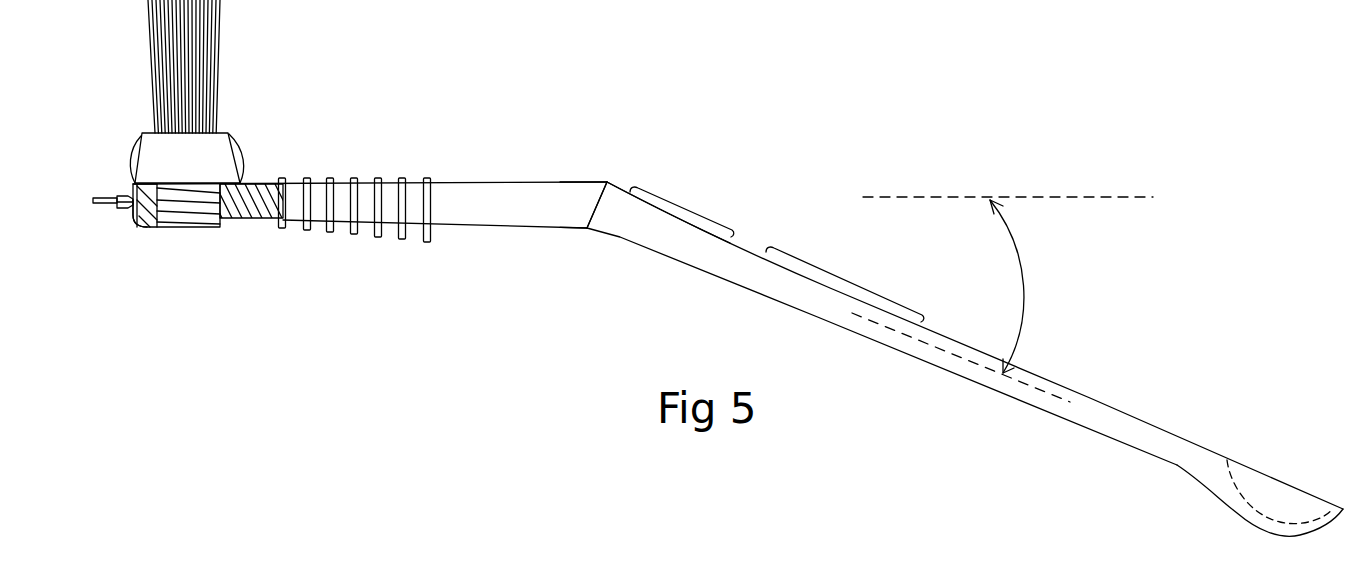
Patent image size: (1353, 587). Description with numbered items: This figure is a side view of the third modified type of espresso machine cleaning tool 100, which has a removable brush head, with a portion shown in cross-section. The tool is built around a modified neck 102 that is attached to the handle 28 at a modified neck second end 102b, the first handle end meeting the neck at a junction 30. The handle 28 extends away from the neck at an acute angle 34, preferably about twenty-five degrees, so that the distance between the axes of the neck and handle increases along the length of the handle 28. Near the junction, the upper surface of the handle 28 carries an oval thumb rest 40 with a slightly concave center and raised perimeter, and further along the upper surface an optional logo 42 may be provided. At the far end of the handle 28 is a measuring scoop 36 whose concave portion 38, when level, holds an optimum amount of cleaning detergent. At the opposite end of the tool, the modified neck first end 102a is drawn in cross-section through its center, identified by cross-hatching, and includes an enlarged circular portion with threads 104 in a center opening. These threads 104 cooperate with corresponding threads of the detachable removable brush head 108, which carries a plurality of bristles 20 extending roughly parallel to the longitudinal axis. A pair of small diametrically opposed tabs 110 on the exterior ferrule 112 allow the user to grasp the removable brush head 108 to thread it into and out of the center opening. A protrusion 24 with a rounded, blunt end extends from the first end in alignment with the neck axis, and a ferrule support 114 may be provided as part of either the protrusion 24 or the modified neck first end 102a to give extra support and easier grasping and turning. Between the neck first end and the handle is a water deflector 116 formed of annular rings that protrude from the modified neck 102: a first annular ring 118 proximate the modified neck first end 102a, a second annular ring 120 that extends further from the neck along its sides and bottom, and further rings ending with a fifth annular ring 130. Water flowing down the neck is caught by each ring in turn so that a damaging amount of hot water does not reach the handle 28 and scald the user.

The bristles 20 is at (213, 60).
The protrusion 24 is at (95, 205).
The handle 28 is at (965, 347).
The junction 30 is at (607, 182).
The acute angle 34 is at (1027, 282).
The measuring scoop 36 is at (1243, 527).
The concave portion 38 is at (1268, 497).
The thumb rest 40 is at (708, 232).
The logo 42 is at (862, 295).
The espresso machine cleaning tool 100 is at (838, 154).
The modified neck 102 is at (489, 157).
The modified neck first end 102a is at (223, 230).
The modified neck second end 102b is at (573, 200).
The threads 104 is at (147, 227).
The removable brush head 108 is at (226, 128).
The tabs 110 is at (137, 152).
The exterior ferrule 112 is at (158, 165).
The ferrule support 114 is at (127, 223).
The water deflector 116 is at (390, 214).
The first annular ring 118 is at (283, 230).
The second annular ring 120 is at (307, 232).
The fifth annular ring 130 is at (427, 242).